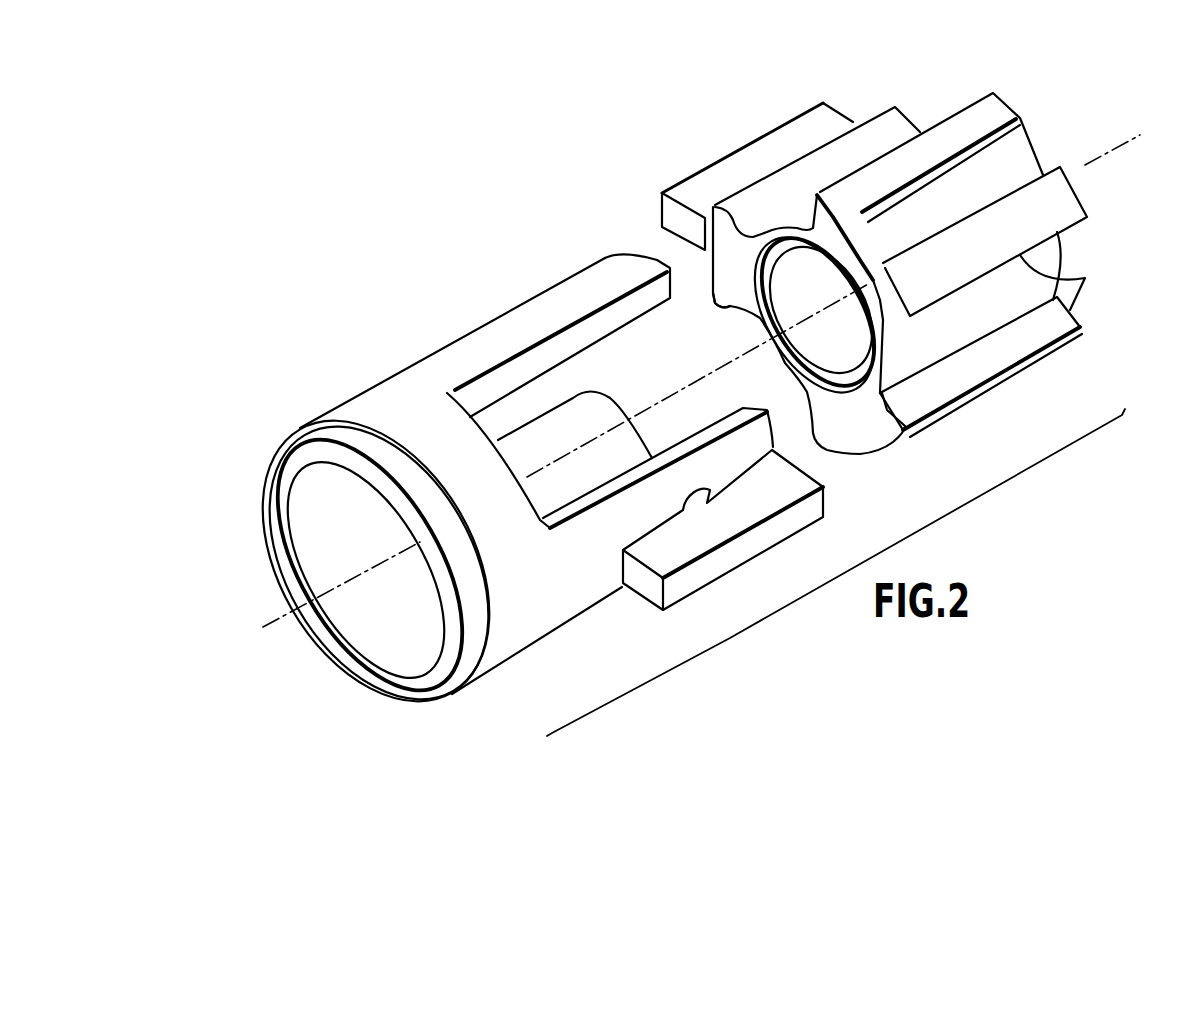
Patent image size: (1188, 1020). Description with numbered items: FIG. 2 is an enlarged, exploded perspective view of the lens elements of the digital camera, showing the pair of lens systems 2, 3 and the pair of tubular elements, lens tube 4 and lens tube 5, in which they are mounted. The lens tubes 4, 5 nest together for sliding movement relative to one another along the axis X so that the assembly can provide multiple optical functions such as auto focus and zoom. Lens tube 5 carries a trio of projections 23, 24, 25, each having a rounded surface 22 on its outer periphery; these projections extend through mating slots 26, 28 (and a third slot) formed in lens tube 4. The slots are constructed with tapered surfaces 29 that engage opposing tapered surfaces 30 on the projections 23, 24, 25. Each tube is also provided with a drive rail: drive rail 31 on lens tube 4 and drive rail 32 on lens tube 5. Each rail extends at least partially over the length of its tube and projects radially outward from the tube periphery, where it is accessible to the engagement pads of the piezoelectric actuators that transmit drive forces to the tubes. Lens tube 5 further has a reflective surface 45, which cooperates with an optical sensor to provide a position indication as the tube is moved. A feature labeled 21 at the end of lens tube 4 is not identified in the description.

The lens system 2 is at (288, 528).
The lens system 3 is at (812, 357).
The lens tube 4 is at (580, 275).
The lens tube 5 is at (922, 250).
The tube end edge 21 is at (547, 638).
The rounded surfaces 22 is at (873, 108).
The projection 23 is at (727, 302).
The projection 24 is at (862, 447).
The projection 25 is at (832, 247).
The slot 26 is at (515, 407).
The slot 28 is at (702, 424).
The tapered surfaces 29 is at (555, 353).
The tapered surfaces 30 is at (1093, 268).
The drive rail 31 is at (653, 560).
The drive rail 32 is at (815, 120).
The reflective surface 45 is at (1017, 153).
The axis X is at (704, 380).